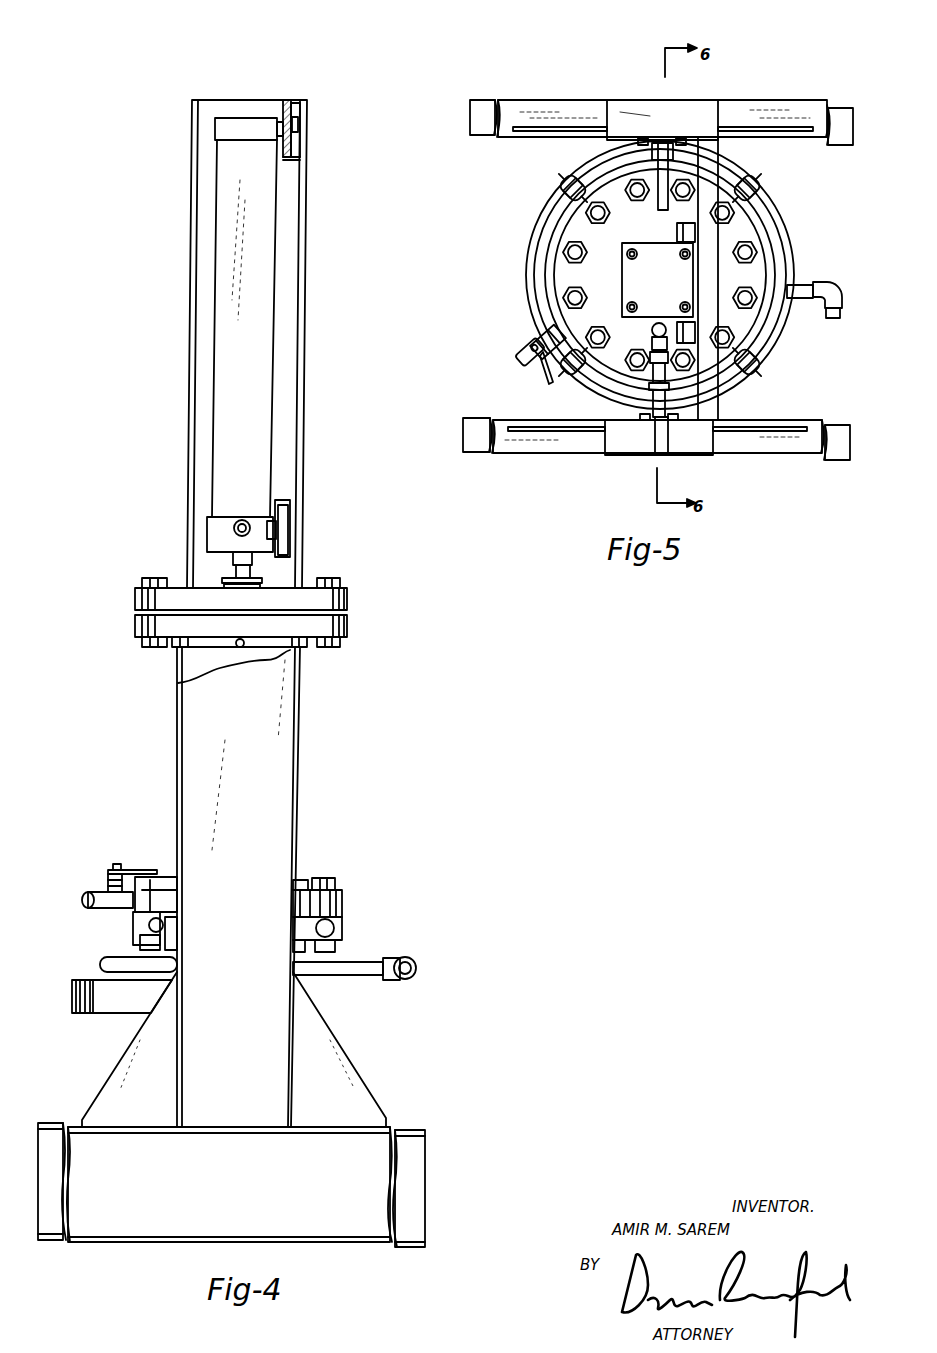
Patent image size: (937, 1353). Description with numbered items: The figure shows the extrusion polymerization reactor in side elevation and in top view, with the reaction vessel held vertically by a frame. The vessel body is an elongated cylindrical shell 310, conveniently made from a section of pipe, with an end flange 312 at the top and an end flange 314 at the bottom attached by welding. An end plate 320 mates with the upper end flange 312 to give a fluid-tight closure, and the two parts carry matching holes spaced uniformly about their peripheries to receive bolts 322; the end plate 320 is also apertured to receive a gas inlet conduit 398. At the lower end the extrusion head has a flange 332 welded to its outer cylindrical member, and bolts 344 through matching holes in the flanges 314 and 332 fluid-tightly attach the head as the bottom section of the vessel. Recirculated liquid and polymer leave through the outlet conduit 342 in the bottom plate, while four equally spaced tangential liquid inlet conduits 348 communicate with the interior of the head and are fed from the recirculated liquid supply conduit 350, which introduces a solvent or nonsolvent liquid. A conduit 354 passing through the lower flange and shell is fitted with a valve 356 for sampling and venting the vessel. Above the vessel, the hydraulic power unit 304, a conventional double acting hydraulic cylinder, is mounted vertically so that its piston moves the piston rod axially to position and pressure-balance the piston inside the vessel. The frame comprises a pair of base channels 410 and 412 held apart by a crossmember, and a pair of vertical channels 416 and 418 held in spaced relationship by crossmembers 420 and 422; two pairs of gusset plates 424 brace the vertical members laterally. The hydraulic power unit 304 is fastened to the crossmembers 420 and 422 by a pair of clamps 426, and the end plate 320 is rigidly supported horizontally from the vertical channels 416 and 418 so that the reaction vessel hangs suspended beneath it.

In FIG. 4, the hydraulic power unit 304 is at (217, 258).
In FIG. 4, the cylindrical shell 310 is at (178, 661).
In FIG. 4, the end flange 312 is at (135, 626).
In FIG. 4, the end flange 314 is at (342, 905).
In FIG. 4, the end plate 320 is at (135, 598).
In FIG. 4, the bolts 322 is at (152, 578).
In FIG. 5, the bolts 322 is at (758, 262).
In FIG. 4, the flange 332 is at (342, 930).
In FIG. 4, the outlet conduit 342 is at (72, 1005).
In FIG. 4, the bolts 344 is at (318, 880).
In FIG. 5, the liquid inlet conduits 348 is at (730, 172).
In FIG. 4, the recirculated liquid supply conduit 350 is at (345, 985).
In FIG. 5, the recirculated liquid supply conduit 350 is at (785, 237).
In FIG. 4, the conduit 354 is at (135, 908).
In FIG. 5, the conduit 354 is at (540, 335).
In FIG. 4, the valve 356 is at (93, 892).
In FIG. 5, the valve 356 is at (520, 360).
In FIG. 4, the gas inlet conduit 398 is at (255, 568).
In FIG. 5, the gas inlet conduit 398 is at (650, 355).
In FIG. 5, the base channel 410 is at (515, 100).
In FIG. 4, the base channel 412 is at (418, 1183).
In FIG. 5, the base channel 412 is at (530, 455).
In FIG. 5, the vertical channel 416 is at (620, 105).
In FIG. 4, the vertical channel 418 is at (285, 757).
In FIG. 5, the vertical channel 418 is at (615, 455).
In FIG. 4, the crossmember 420 is at (292, 500).
In FIG. 4, the crossmember 422 is at (296, 100).
In FIG. 4, the gusset plates 424 is at (100, 1075).
In FIG. 5, the gusset plates 424 is at (525, 140).
In FIG. 4, the clamps 426 is at (215, 128).